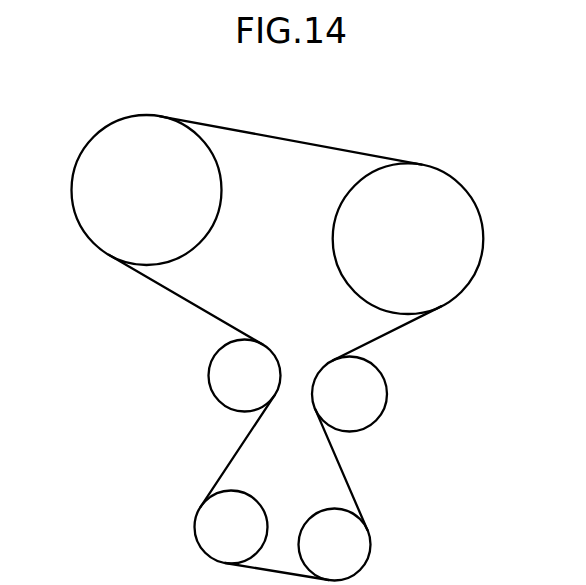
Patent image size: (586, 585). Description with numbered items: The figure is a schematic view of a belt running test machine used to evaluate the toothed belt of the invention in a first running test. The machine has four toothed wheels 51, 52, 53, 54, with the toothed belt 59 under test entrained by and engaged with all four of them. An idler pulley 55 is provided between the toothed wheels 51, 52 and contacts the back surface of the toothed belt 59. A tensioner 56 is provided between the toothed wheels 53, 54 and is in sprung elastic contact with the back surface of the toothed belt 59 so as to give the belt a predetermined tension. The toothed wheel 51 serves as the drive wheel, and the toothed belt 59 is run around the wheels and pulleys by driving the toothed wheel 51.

The toothed wheel 51 is at (97, 162).
The toothed wheel 52 is at (210, 525).
The toothed wheel 53 is at (355, 548).
The toothed wheel 54 is at (462, 247).
The idler pulley 55 is at (227, 378).
The tensioner 56 is at (367, 393).
The toothed belt 59 is at (175, 295).